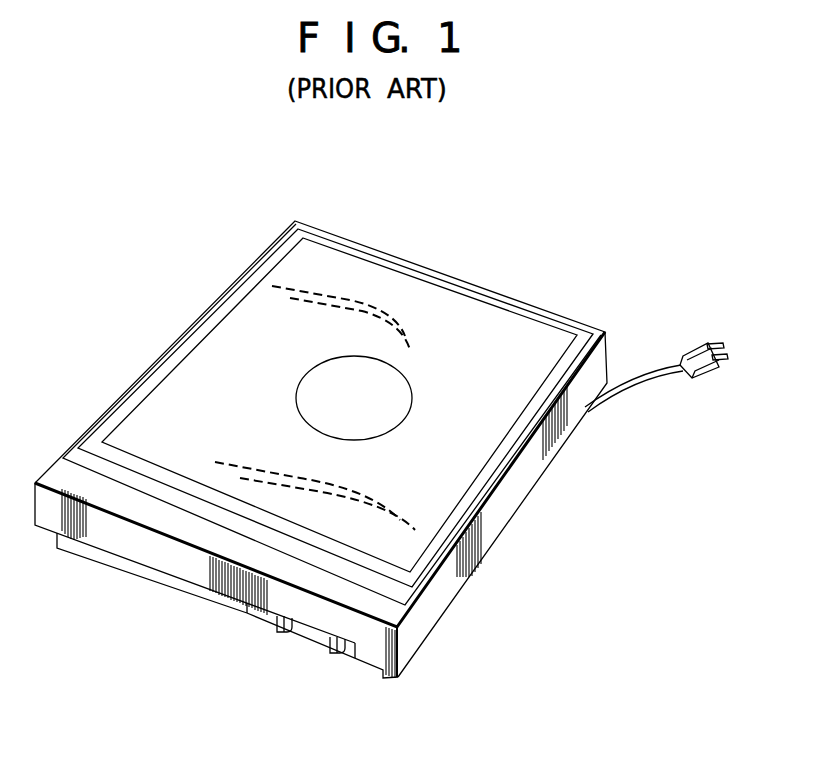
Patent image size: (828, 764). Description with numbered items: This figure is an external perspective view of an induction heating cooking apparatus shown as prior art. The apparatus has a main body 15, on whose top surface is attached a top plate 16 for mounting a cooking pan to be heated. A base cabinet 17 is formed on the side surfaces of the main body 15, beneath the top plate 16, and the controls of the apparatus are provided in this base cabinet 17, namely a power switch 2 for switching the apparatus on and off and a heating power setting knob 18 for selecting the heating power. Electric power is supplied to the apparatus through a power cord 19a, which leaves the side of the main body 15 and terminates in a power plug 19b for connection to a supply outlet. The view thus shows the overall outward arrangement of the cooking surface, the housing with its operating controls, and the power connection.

The power switch 2 is at (317, 643).
The main body 15 is at (372, 246).
The top plate 16 is at (485, 312).
The base cabinet 17 is at (255, 615).
The heating power setting knob 18 is at (282, 632).
The power cord 19a is at (637, 388).
The power plug 19b is at (691, 350).